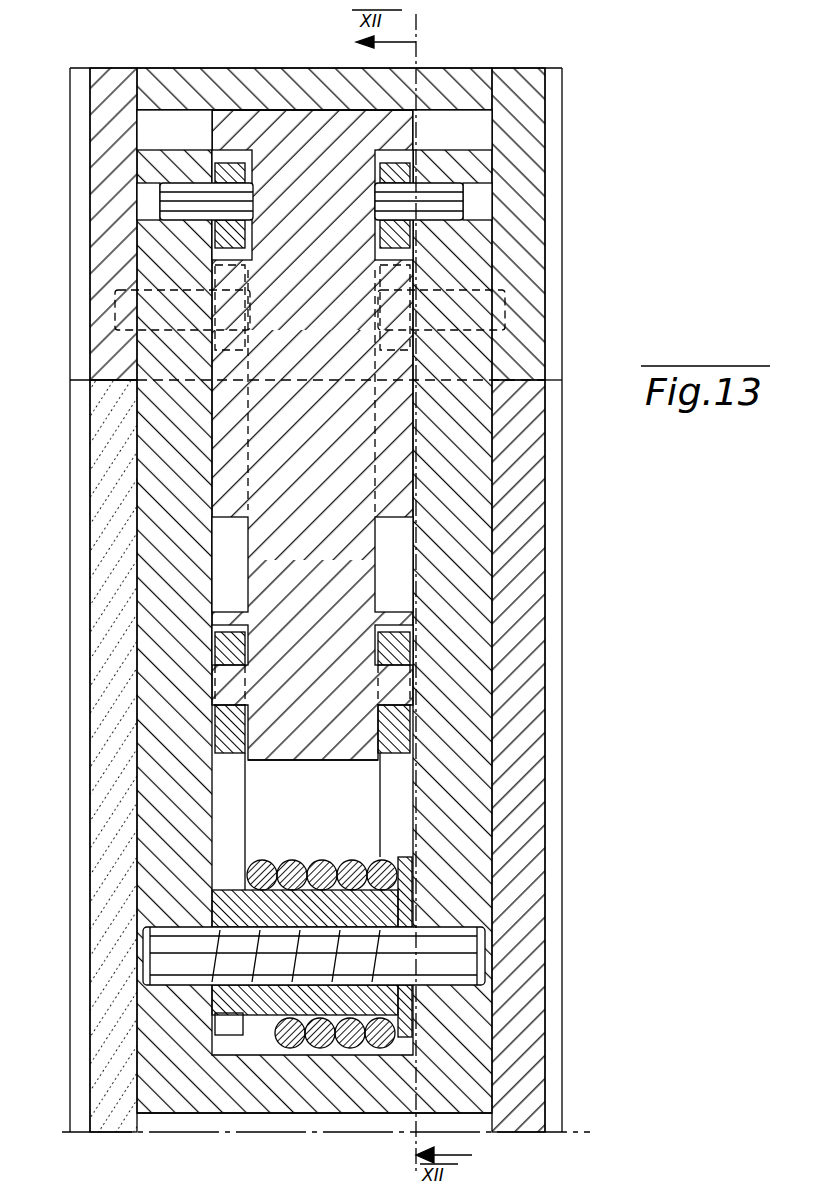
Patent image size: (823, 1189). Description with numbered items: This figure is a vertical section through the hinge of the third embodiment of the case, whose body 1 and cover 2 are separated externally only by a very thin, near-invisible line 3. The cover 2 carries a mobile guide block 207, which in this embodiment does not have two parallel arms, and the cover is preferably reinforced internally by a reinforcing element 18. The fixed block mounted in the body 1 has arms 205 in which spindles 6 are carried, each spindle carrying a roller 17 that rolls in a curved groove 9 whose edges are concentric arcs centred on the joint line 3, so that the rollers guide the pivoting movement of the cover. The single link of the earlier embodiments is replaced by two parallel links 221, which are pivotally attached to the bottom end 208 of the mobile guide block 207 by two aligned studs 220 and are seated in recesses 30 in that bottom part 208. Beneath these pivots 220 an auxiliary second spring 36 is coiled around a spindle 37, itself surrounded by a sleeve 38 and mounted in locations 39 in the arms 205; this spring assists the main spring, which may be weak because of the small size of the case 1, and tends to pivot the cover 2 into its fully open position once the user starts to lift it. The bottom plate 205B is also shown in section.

The body 1 is at (92, 450).
The cover 2 is at (232, 84).
The line 3 is at (76, 384).
The spindles 6 is at (190, 195).
The curved groove 9 is at (390, 158).
The roller 17 is at (232, 172).
The reinforcing element 18 is at (428, 126).
The recesses 30 is at (217, 627).
The second spring 36 is at (350, 862).
The spindle 37 is at (462, 953).
The sleeve 38 is at (297, 900).
The locations 39 is at (142, 932).
The arms 205 is at (450, 166).
The base plate 205B is at (347, 1100).
The mobile guide block 207 is at (322, 130).
The bottom end 208 is at (316, 762).
The studs 220 is at (223, 693).
The parallel links 221 is at (223, 653).